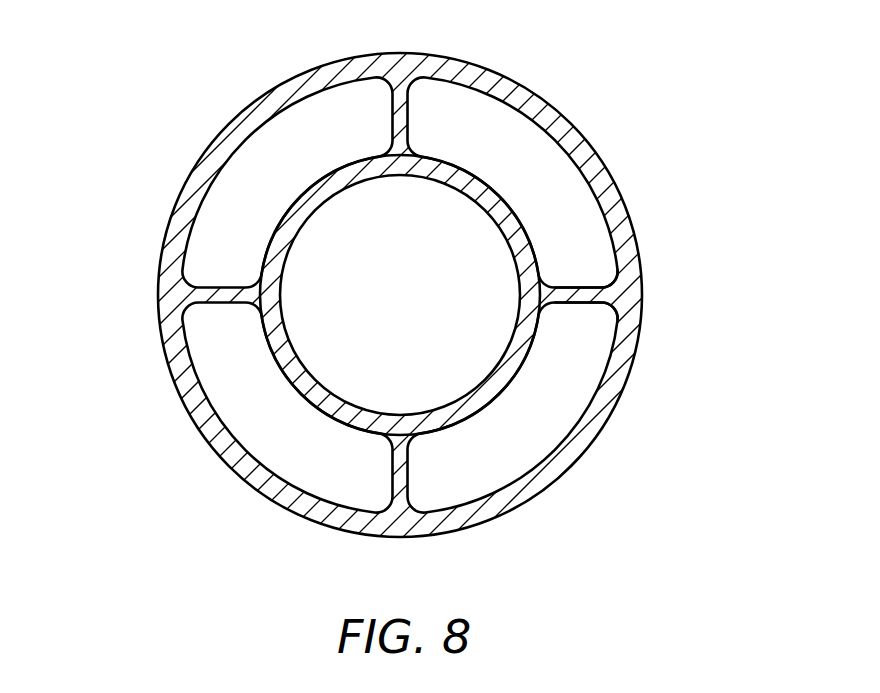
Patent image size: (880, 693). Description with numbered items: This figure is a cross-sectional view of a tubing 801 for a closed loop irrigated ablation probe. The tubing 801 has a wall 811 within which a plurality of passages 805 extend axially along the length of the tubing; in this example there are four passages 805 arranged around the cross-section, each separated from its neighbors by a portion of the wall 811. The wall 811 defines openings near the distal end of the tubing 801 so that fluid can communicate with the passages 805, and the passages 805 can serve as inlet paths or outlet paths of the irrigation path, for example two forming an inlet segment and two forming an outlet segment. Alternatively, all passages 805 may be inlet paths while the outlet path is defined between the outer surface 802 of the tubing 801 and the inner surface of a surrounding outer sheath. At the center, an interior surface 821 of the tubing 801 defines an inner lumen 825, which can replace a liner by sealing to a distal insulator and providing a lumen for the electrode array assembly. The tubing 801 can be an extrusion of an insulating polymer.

The tubing 801 is at (406, 62).
The outer surface 802 is at (146, 284).
The passages 805 is at (243, 185).
The wall 811 is at (618, 293).
The interior surface 821 is at (458, 385).
The inner lumen 825 is at (300, 298).